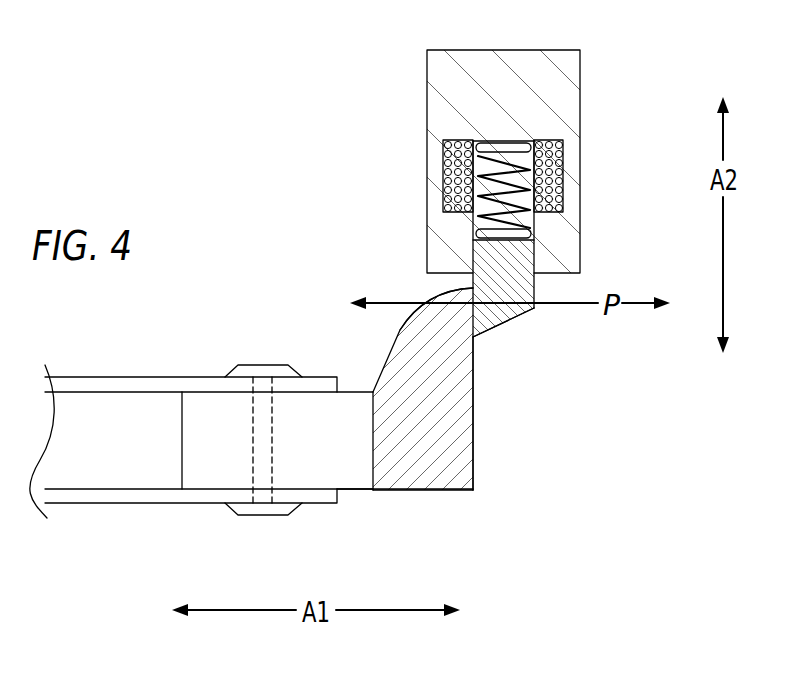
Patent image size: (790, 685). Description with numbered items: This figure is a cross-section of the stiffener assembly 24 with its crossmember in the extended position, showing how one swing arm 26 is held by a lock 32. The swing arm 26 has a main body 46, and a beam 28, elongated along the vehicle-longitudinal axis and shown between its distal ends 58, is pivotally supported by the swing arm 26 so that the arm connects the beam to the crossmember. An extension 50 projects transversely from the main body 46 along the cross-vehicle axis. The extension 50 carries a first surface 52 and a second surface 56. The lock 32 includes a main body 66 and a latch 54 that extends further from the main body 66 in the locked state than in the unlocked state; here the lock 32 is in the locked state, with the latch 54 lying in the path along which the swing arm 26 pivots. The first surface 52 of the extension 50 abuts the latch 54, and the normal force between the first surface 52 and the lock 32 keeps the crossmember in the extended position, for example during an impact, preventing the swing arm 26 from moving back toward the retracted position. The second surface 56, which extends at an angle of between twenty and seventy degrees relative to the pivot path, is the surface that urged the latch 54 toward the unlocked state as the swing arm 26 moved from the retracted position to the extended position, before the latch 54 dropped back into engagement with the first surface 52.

The stiffener assembly 24 is at (232, 196).
The swing arm 26 is at (360, 490).
The beam 28 is at (145, 497).
The lock 32 is at (372, 132).
The main body 46 is at (458, 467).
The extension 50 is at (413, 373).
The first surface 52 is at (473, 347).
The latch 54 is at (518, 286).
The second surface 56 is at (392, 348).
The distal end 58 is at (312, 505).
The main body 66 is at (581, 80).